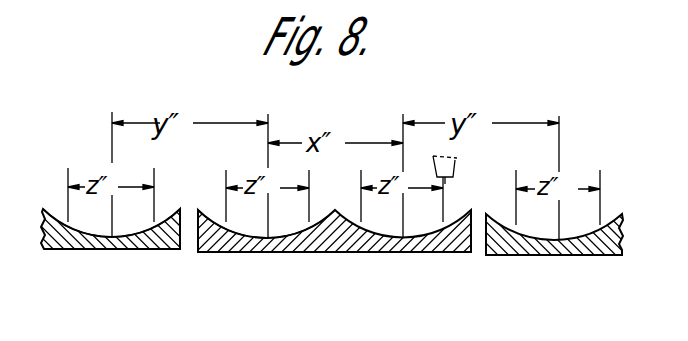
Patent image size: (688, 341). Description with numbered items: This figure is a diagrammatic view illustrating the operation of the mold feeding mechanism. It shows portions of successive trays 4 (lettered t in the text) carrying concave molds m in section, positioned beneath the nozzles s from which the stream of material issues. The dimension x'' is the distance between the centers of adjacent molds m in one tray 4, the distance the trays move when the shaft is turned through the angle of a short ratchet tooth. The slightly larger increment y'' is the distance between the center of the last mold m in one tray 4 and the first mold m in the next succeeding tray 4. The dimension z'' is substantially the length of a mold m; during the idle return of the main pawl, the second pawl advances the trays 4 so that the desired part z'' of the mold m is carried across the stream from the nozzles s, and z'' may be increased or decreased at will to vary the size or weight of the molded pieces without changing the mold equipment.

The plate / bar body 4 is at (153, 249).
The mold m is at (102, 222).
The nozzle s is at (457, 162).